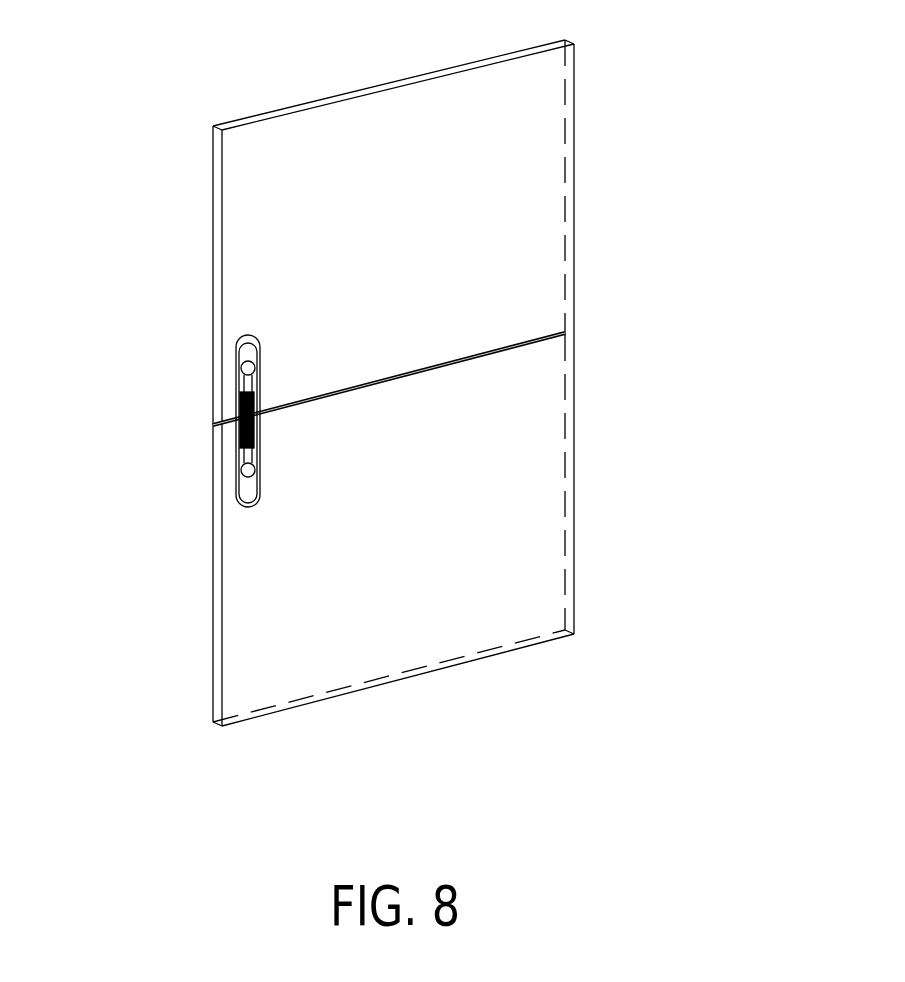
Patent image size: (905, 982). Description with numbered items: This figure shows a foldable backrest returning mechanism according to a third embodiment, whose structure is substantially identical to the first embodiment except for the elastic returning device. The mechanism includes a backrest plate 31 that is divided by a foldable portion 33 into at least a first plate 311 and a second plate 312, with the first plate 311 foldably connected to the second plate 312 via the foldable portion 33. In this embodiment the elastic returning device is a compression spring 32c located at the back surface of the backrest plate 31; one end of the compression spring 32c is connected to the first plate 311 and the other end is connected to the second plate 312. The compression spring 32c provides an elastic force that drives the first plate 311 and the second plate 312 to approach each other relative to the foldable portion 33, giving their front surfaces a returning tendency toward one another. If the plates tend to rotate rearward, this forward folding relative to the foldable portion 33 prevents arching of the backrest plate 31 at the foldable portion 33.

The backrest plate 31 is at (716, 287).
The second plate 312 is at (512, 243).
The first plate 311 is at (525, 394).
The foldable portion 33 is at (357, 387).
The compression spring 32c is at (237, 402).